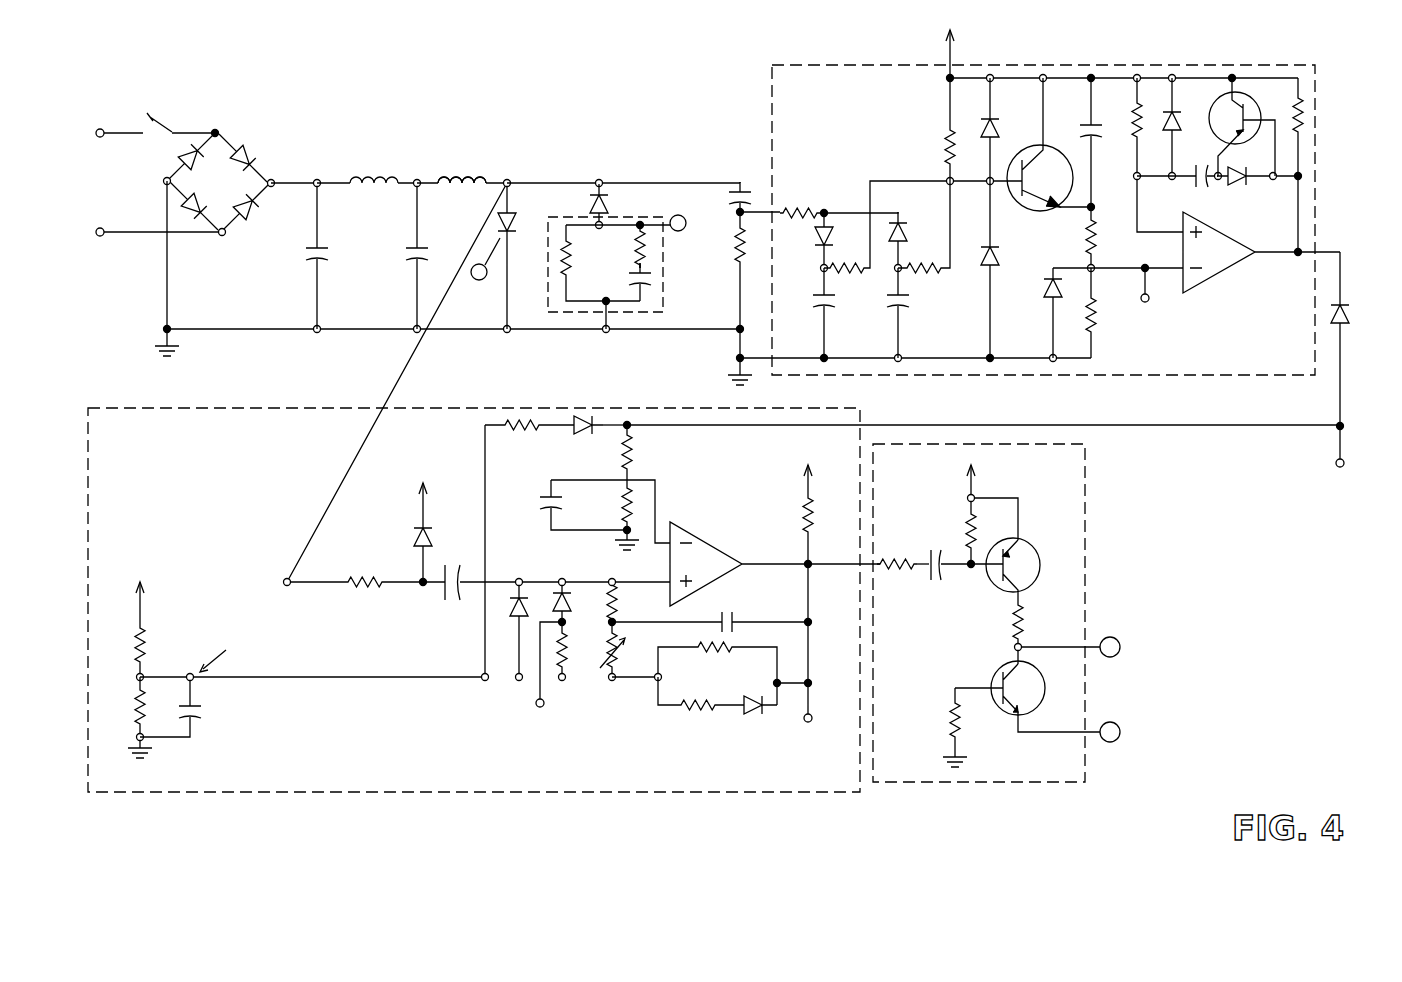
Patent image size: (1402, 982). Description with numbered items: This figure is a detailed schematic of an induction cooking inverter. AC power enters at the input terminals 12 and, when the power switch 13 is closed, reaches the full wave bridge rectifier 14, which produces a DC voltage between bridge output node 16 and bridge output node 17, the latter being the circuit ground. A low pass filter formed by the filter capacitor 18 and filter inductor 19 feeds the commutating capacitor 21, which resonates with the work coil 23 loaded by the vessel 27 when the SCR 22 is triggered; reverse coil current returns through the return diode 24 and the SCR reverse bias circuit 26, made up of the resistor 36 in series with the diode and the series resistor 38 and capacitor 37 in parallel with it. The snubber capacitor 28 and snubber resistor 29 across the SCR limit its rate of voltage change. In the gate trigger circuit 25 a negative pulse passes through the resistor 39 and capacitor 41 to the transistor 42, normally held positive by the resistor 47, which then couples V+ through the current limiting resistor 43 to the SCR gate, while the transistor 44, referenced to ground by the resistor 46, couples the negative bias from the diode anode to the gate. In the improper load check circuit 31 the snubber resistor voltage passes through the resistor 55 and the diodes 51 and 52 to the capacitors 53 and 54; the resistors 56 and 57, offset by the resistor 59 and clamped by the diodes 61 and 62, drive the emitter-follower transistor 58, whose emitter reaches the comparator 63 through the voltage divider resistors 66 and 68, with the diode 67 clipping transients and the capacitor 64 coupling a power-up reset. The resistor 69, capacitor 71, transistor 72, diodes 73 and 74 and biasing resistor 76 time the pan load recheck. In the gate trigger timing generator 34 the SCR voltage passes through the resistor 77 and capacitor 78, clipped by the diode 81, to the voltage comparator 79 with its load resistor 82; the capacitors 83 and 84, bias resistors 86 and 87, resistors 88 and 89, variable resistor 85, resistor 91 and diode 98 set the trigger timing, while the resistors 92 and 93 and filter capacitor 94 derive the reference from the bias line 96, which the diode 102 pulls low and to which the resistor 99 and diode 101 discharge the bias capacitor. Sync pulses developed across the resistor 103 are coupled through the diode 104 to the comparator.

The input terminals 12 is at (104, 124).
The power switch 13 is at (151, 147).
The full wave bridge rectifier 14 is at (232, 188).
The bridge output node 16 is at (300, 178).
The bridge output node 17 is at (227, 340).
The filter capacitor 18 is at (322, 250).
The filter inductor 19 is at (365, 180).
The commutating capacitor 21 is at (428, 245).
The SCR 22 is at (514, 216).
The work coil 23 is at (470, 190).
The return diode 24 is at (610, 196).
The gate trigger circuit 25 is at (1087, 571).
The SCR reverse bias circuit 26 is at (609, 272).
The vessel 27 is at (440, 172).
The snubber capacitor 28 is at (745, 186).
The snubber resistor 29 is at (737, 242).
The improper load check circuit 31 is at (1316, 101).
The gate trigger timing generator 34 is at (663, 793).
The resistor 36 is at (562, 262).
The capacitor 37 is at (650, 272).
The resistor 38 is at (634, 252).
The resistor 39 is at (888, 560).
The capacitor 41 is at (930, 584).
The transistor 42 is at (1022, 546).
The current limiting resistor 43 is at (1025, 613).
The transistor 44 is at (1036, 700).
The resistor 46 is at (963, 745).
The resistor 47 is at (965, 515).
The diode 51 is at (815, 242).
The diode 52 is at (903, 230).
The capacitor 53 is at (828, 310).
The capacitor 54 is at (902, 310).
The resistor 55 is at (805, 164).
The resistor 56 is at (840, 240).
The resistor 57 is at (932, 272).
The emitter-follower transistor 58 is at (1030, 206).
The resistor 59 is at (947, 140).
The diode 61 is at (993, 129).
The diode 62 is at (1000, 257).
The comparator 63 is at (1222, 272).
The capacitor 64 is at (1122, 106).
The voltage divider resistor 66 is at (1096, 245).
The diode 67 is at (1045, 288).
The voltage divider resistor 68 is at (1097, 310).
The resistor 69 is at (1135, 146).
The capacitor 71 is at (1196, 190).
The transistor 72 is at (1248, 108).
The diode 73 is at (1174, 112).
The diode 74 is at (1233, 186).
The biasing resistor 76 is at (1305, 128).
The resistor 77 is at (370, 578).
The capacitor 78 is at (440, 592).
The voltage comparator 79 is at (704, 546).
The diode 81 is at (432, 532).
The load resistor 82 is at (815, 500).
The capacitor 83 is at (203, 706).
The capacitor 84 is at (736, 620).
The variable resistor 85 is at (620, 690).
The resistor 86 is at (146, 646).
The resistor 87 is at (136, 700).
The resistor 88 is at (718, 652).
The resistor 89 is at (711, 705).
The resistor 91 is at (618, 605).
The resistor 92 is at (636, 448).
The resistor 93 is at (624, 507).
The filter capacitor 94 is at (545, 497).
The bias line 96 is at (1204, 435).
The diode 98 is at (508, 605).
The resistor 99 is at (506, 433).
The diode 101 is at (583, 418).
The diode 102 is at (1350, 309).
The resistor 103 is at (568, 668).
The diode 104 is at (578, 563).